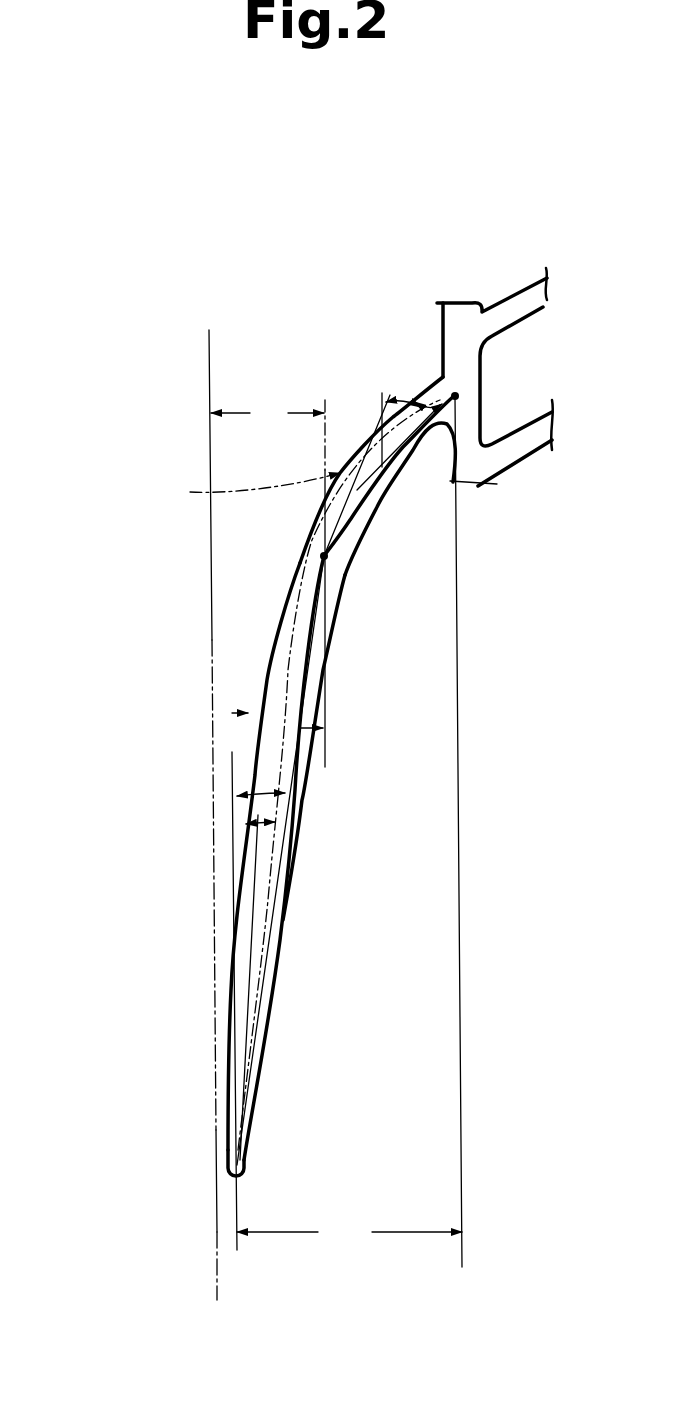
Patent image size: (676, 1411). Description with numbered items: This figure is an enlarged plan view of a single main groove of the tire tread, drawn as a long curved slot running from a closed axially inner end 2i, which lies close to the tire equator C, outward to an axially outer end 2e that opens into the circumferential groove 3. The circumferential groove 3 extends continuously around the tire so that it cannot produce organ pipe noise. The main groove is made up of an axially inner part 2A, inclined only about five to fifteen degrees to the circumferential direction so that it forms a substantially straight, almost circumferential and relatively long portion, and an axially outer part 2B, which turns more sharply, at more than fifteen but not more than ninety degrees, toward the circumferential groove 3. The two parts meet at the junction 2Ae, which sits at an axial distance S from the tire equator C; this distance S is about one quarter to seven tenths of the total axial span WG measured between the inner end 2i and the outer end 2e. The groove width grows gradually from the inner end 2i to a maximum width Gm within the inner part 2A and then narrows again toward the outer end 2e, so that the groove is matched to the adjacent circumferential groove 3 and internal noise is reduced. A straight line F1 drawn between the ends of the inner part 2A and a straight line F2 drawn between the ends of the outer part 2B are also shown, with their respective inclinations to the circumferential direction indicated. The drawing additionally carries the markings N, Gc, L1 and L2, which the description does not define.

The axially inner part 2A is at (300, 913).
The axially outer part 2B is at (392, 500).
The junction 2Ae is at (320, 554).
The axially outer end 2e is at (459, 394).
The axially inner end 2i is at (223, 1184).
The circumferential groove 3 is at (458, 327).
The tire equator C is at (210, 814).
The axial distance S is at (267, 413).
The axial distance between inner end and outer end WG is at (347, 832).
The normal line N is at (190, 492).
The camber line Gc is at (288, 668).
The maximum width Gm is at (296, 716).
The chord line of first portion L1 is at (285, 851).
The reference line at outlet edge L2 is at (497, 484).
The straight line F1 is at (290, 767).
The straight line F2 is at (345, 530).